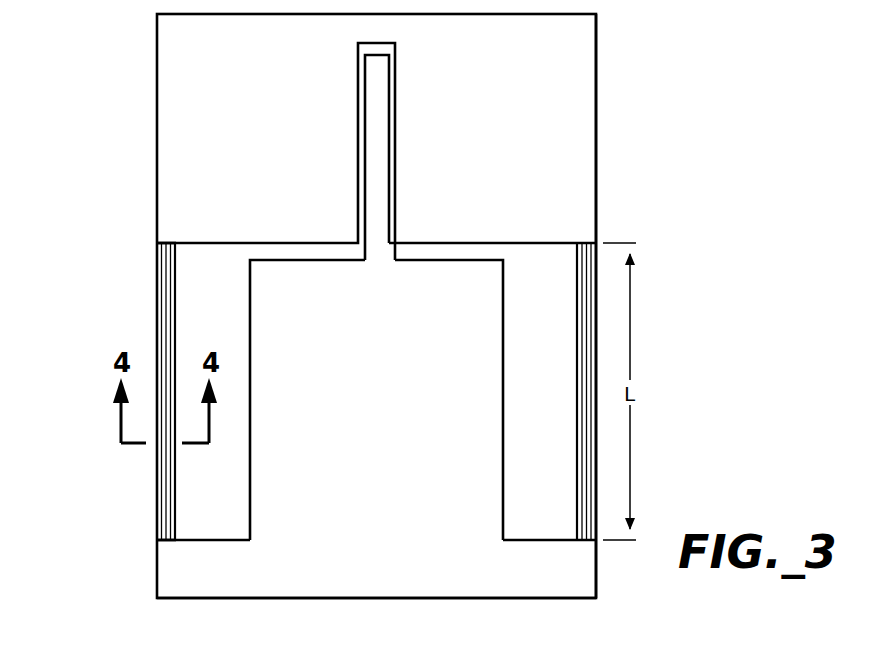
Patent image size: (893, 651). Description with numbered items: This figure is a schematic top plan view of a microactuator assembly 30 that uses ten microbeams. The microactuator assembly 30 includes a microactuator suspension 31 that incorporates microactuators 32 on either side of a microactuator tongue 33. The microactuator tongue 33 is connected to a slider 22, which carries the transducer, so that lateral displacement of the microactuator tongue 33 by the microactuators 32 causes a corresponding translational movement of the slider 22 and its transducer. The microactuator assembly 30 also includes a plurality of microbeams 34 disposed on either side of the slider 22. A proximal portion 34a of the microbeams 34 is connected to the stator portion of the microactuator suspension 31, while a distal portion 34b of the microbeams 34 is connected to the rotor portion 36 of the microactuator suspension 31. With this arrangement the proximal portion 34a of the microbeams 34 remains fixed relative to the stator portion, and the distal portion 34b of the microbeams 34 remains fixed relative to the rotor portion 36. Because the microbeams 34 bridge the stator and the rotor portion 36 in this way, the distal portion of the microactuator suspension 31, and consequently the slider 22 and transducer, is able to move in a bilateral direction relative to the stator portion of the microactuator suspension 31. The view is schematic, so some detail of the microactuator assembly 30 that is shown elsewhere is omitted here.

The microactuator assembly 30 is at (112, 97).
The microactuator suspension 31 is at (603, 185).
The microactuators 32 is at (266, 134).
The microactuator tongue 33 is at (375, 220).
The slider 22 is at (389, 425).
The microbeams 34 is at (156, 317).
The proximal portion of the microbeams 34a is at (157, 258).
The distal portion of the microbeams 34b is at (157, 540).
The rotor portion 36 is at (596, 557).